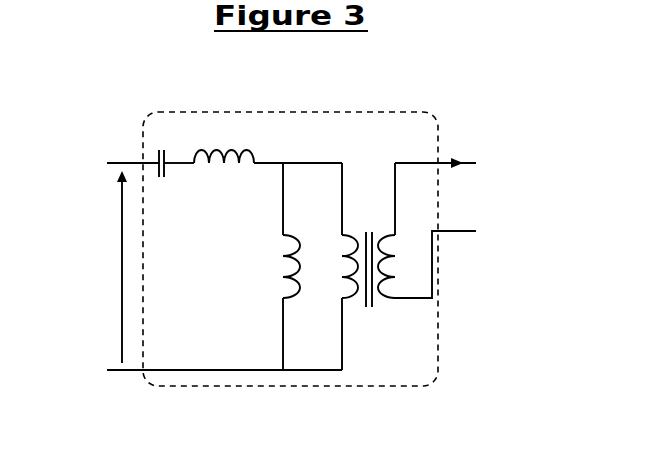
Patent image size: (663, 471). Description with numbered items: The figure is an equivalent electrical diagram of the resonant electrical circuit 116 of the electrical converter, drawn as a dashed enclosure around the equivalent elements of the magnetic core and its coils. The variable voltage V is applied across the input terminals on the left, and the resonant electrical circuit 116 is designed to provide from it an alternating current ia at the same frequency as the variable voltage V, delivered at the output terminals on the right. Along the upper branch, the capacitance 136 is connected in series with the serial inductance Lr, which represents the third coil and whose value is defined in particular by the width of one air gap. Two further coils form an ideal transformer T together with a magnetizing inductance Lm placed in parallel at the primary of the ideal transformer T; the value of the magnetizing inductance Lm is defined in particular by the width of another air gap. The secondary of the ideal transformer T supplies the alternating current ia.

The resonant electrical circuit 116 is at (197, 109).
The capacitance 136 is at (165, 170).
The serial inductance Lr is at (230, 148).
The magnetizing inductance Lm is at (291, 266).
The ideal transformer T is at (368, 316).
The alternating current ia is at (435, 147).
The variable voltage V is at (105, 267).